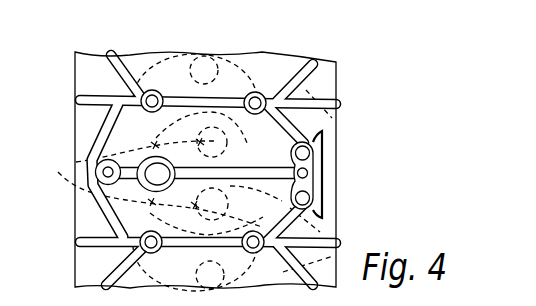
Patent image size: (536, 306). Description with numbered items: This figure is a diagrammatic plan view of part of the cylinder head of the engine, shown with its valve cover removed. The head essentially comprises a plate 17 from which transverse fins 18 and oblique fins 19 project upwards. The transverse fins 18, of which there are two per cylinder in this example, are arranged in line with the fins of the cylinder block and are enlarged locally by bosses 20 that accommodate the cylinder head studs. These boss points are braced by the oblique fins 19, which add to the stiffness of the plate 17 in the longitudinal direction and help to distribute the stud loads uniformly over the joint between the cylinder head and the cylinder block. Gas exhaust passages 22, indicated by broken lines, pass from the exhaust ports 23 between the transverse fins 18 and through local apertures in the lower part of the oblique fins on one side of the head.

The plate 17 is at (347, 89).
The transverse fins 18 is at (78, 110).
The oblique fins 19 is at (297, 72).
The bosses 20 is at (157, 88).
The gas exhaust passages 22 is at (338, 143).
The exhaust ports 23 is at (90, 163).